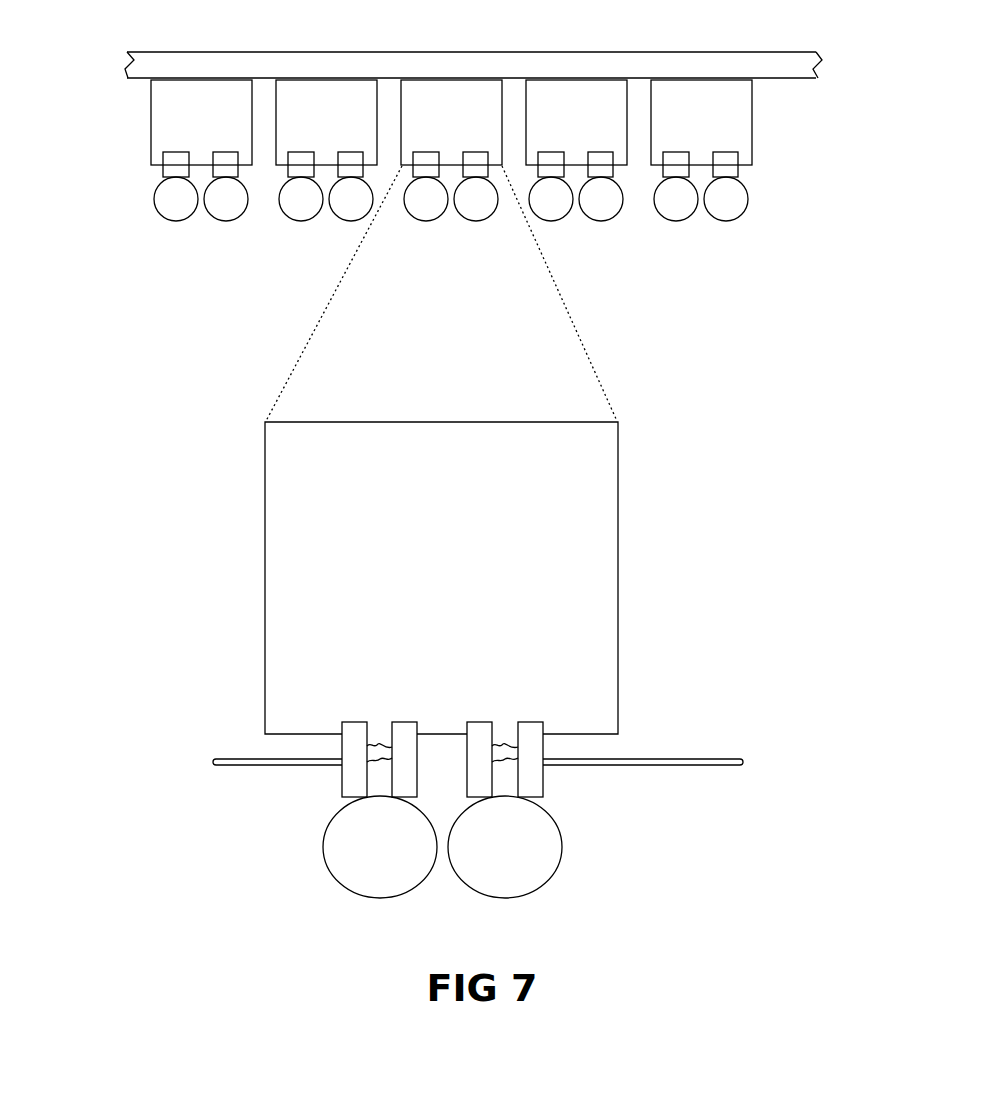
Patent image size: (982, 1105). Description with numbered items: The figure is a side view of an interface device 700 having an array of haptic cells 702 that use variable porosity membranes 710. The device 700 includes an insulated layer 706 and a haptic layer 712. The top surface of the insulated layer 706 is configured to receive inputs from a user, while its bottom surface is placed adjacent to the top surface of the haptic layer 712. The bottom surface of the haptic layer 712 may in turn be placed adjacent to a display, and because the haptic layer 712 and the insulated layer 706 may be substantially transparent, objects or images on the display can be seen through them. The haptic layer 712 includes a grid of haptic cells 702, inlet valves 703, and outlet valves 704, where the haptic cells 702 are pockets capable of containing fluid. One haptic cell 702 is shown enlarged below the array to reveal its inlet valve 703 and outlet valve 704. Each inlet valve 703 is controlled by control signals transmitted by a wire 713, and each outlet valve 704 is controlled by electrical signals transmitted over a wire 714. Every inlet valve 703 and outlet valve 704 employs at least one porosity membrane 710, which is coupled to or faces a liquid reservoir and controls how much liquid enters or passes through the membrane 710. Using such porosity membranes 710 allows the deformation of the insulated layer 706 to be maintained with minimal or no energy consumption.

The interface device 700 is at (805, 498).
The haptic cell 702 is at (491, 419).
The inlet valve 703 is at (352, 785).
The outlet valve 704 is at (518, 785).
The insulated layer 706 is at (300, 62).
The porosity membrane 710 is at (380, 742).
The haptic layer 712 is at (130, 78).
The wire 713 is at (252, 767).
The wire 714 is at (667, 767).